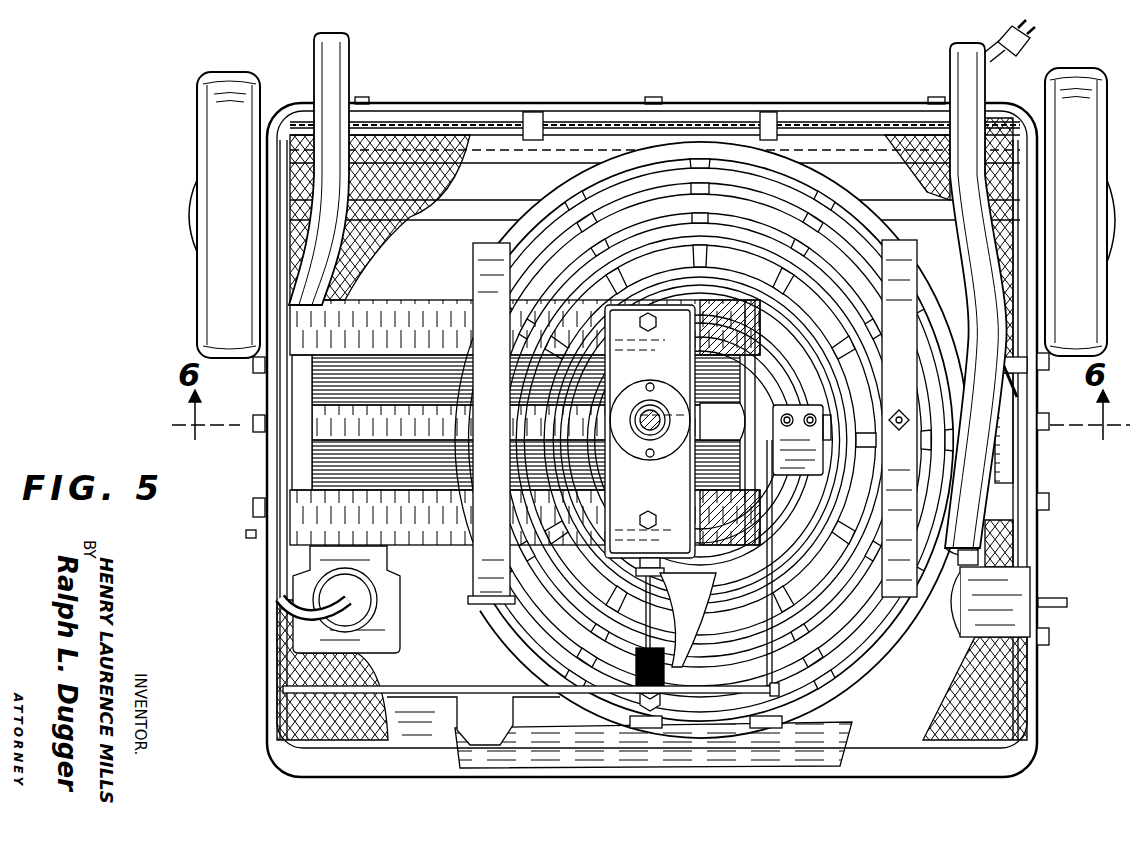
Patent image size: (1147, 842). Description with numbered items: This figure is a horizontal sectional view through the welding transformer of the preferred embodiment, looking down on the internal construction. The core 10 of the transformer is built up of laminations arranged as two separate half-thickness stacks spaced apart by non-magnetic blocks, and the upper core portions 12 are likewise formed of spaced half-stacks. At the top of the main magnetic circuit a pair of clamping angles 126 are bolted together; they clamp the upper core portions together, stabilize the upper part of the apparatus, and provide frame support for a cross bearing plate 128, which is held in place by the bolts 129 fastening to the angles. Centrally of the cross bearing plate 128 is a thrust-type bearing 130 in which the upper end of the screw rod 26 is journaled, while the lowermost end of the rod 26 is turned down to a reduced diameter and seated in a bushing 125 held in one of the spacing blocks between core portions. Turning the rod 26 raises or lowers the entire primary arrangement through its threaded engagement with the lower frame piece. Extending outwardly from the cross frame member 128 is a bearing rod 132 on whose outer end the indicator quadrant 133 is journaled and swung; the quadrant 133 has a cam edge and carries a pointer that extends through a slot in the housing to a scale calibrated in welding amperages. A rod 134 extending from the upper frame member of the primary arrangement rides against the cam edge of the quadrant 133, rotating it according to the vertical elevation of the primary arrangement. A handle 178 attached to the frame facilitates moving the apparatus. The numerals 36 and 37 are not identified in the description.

The core 10 is at (418, 372).
The core portions 12 is at (450, 455).
The bushing 125 is at (518, 415).
The clamping angles 126 is at (378, 341).
The cross bearing plate 128 is at (672, 369).
The bolts 129 is at (656, 326).
The bearing 130 is at (668, 435).
The screw rod 26 is at (649, 432).
The coil turn 36 is at (774, 157).
The outer coil turn 37 is at (732, 150).
The bearing rod 132 is at (655, 618).
The indicator quadrant 133 is at (413, 688).
The rod 134 is at (820, 668).
The handle 178 is at (1012, 62).